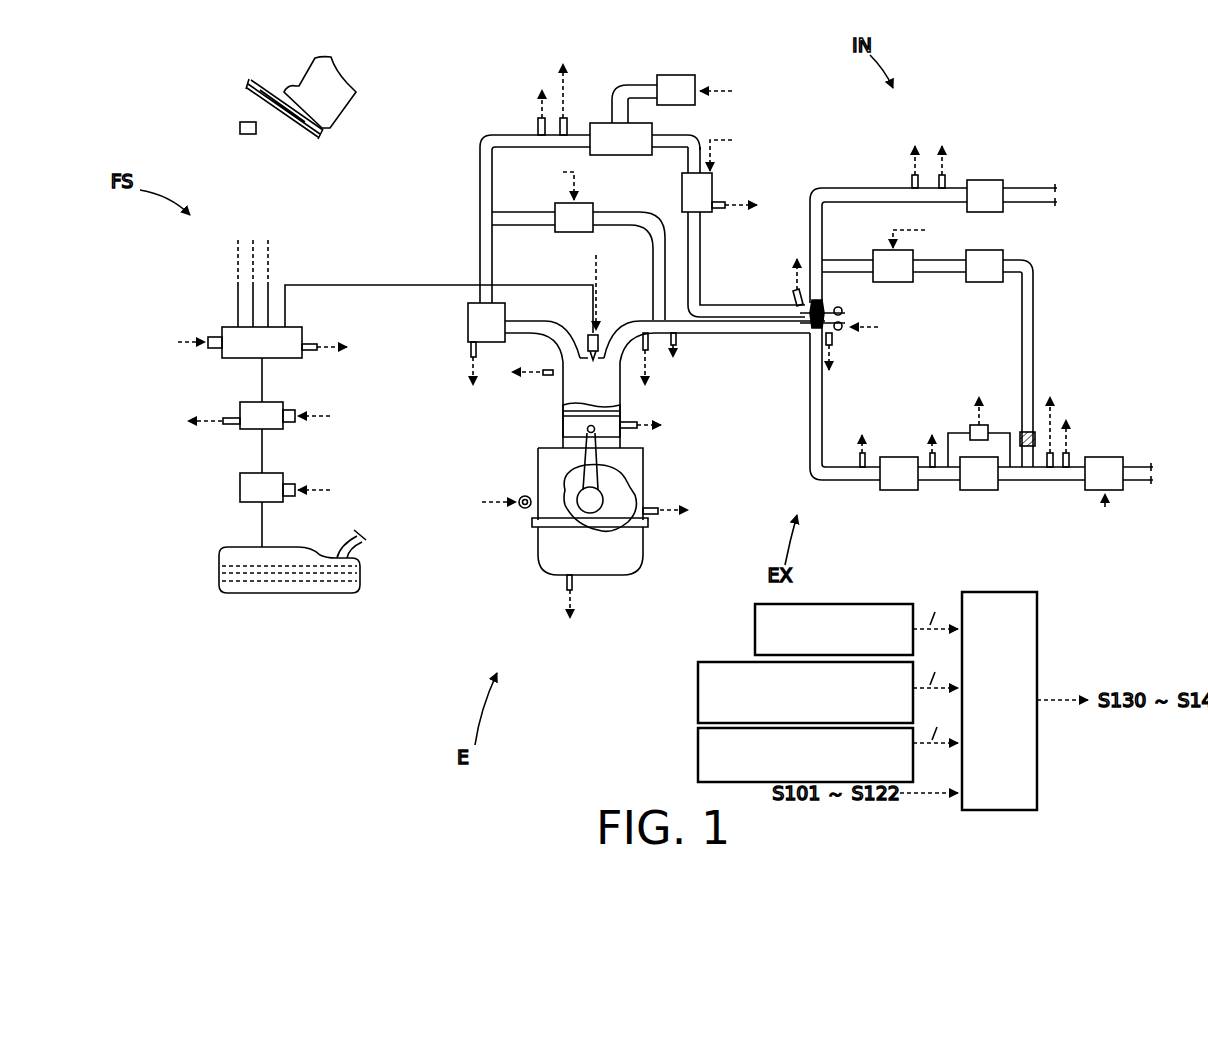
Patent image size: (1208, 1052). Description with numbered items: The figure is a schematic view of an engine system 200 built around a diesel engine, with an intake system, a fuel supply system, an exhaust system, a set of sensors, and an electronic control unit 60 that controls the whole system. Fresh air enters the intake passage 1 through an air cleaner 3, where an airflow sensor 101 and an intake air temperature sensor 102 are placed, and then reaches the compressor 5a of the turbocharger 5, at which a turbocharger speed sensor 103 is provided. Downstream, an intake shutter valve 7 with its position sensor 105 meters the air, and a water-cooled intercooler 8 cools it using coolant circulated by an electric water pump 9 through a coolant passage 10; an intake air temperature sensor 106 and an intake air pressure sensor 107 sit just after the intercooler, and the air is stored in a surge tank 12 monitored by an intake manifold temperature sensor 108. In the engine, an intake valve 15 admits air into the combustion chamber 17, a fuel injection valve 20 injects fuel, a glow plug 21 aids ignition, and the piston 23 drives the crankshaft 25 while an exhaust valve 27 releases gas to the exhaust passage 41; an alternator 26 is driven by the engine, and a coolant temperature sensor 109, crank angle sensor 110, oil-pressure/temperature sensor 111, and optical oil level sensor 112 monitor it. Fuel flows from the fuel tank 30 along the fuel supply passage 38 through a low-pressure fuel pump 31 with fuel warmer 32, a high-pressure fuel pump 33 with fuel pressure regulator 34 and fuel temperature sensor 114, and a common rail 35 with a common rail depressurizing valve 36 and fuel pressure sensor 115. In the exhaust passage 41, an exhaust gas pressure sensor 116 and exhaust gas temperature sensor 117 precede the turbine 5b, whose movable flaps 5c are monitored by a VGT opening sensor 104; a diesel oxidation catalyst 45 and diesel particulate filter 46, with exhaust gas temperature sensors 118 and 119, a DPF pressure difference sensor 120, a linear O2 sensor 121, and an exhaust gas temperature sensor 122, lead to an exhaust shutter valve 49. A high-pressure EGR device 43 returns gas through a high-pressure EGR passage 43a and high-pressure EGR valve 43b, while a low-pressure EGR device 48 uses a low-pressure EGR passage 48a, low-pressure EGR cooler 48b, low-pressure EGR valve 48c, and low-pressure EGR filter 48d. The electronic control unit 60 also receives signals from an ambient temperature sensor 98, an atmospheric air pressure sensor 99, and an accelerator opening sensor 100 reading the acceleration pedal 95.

The intake passage 1 is at (480, 184).
The air cleaner 3 is at (1003, 190).
The turbocharger 5 is at (848, 313).
The compressor 5a is at (828, 310).
The turbine 5b is at (813, 335).
The movable flaps 5c is at (805, 338).
The intake shutter valve 7 is at (682, 186).
The water-cooled intercooler 8 is at (612, 120).
The electric water pump 9 is at (680, 75).
The coolant passage 10 is at (633, 90).
The surge tank 12 is at (468, 322).
The intake valve 15 is at (563, 362).
The combustion chamber 17 is at (580, 398).
The fuel injection valve 20 is at (588, 338).
The glow plug 21 is at (560, 345).
The piston 23 is at (563, 432).
The crankshaft 25 is at (592, 505).
The alternator 26 is at (520, 507).
The exhaust valve 27 is at (606, 345).
The fuel tank 30 is at (219, 565).
The low-pressure fuel pump 31 is at (240, 489).
The fuel warmer 32 is at (291, 497).
The high-pressure fuel pump 33 is at (283, 406).
The fuel pressure regulator 34 is at (291, 423).
The common rail 35 is at (214, 350).
The common rail depressurizing valve 36 is at (222, 327).
The fuel supply passage 38 is at (385, 284).
The exhaust passage 41 is at (752, 336).
The high-pressure EGR device 43 is at (570, 255).
The high-pressure EGR passage 43a is at (653, 252).
The high-pressure EGR valve 43b is at (593, 206).
The diesel oxidation catalyst 45 is at (899, 490).
The diesel particulate filter 46 is at (979, 490).
The low-pressure EGR device 48 is at (1050, 245).
The low-pressure EGR passage 48a is at (1033, 310).
The low-pressure EGR cooler 48b is at (985, 282).
The low-pressure EGR valve 48c is at (873, 256).
The low-pressure EGR filter 48d is at (1028, 447).
The exhaust shutter valve 49 is at (1123, 490).
The electronic control unit 60 is at (1037, 620).
The acceleration pedal 95 is at (248, 92).
The ambient temperature sensor 98 is at (755, 628).
The atmospheric air pressure sensor 99 is at (698, 692).
The accelerator opening sensor 100 is at (240, 128).
The airflow sensor 101 is at (945, 180).
The intake air temperature sensor 102 is at (912, 180).
The turbocharger speed sensor 103 is at (795, 297).
The VGT opening sensor 104 is at (833, 340).
The intake shutter valve position sensor 105 is at (725, 204).
The intake air temperature sensor 106 is at (565, 118).
The intake air pressure sensor 107 is at (538, 128).
The intake manifold temperature sensor 108 is at (471, 352).
The coolant temperature sensor 109 is at (548, 376).
The crank angle sensor 110 is at (655, 514).
The oil-pressure/temperature sensor 111 is at (645, 428).
The optical oil level sensor 112 is at (567, 584).
The fuel temperature sensor 114 is at (230, 418).
The fuel pressure sensor 115 is at (310, 344).
The exhaust gas pressure sensor 116 is at (645, 333).
The exhaust gas temperature sensor 117 is at (676, 338).
The exhaust gas temperature sensor 118 is at (861, 468).
The exhaust gas temperature sensor 119 is at (933, 468).
The DPF pressure difference sensor 120 is at (985, 425).
The linear O2 sensor 121 is at (1050, 468).
The exhaust gas temperature sensor 122 is at (1069, 455).
The engine system 200 is at (1128, 112).